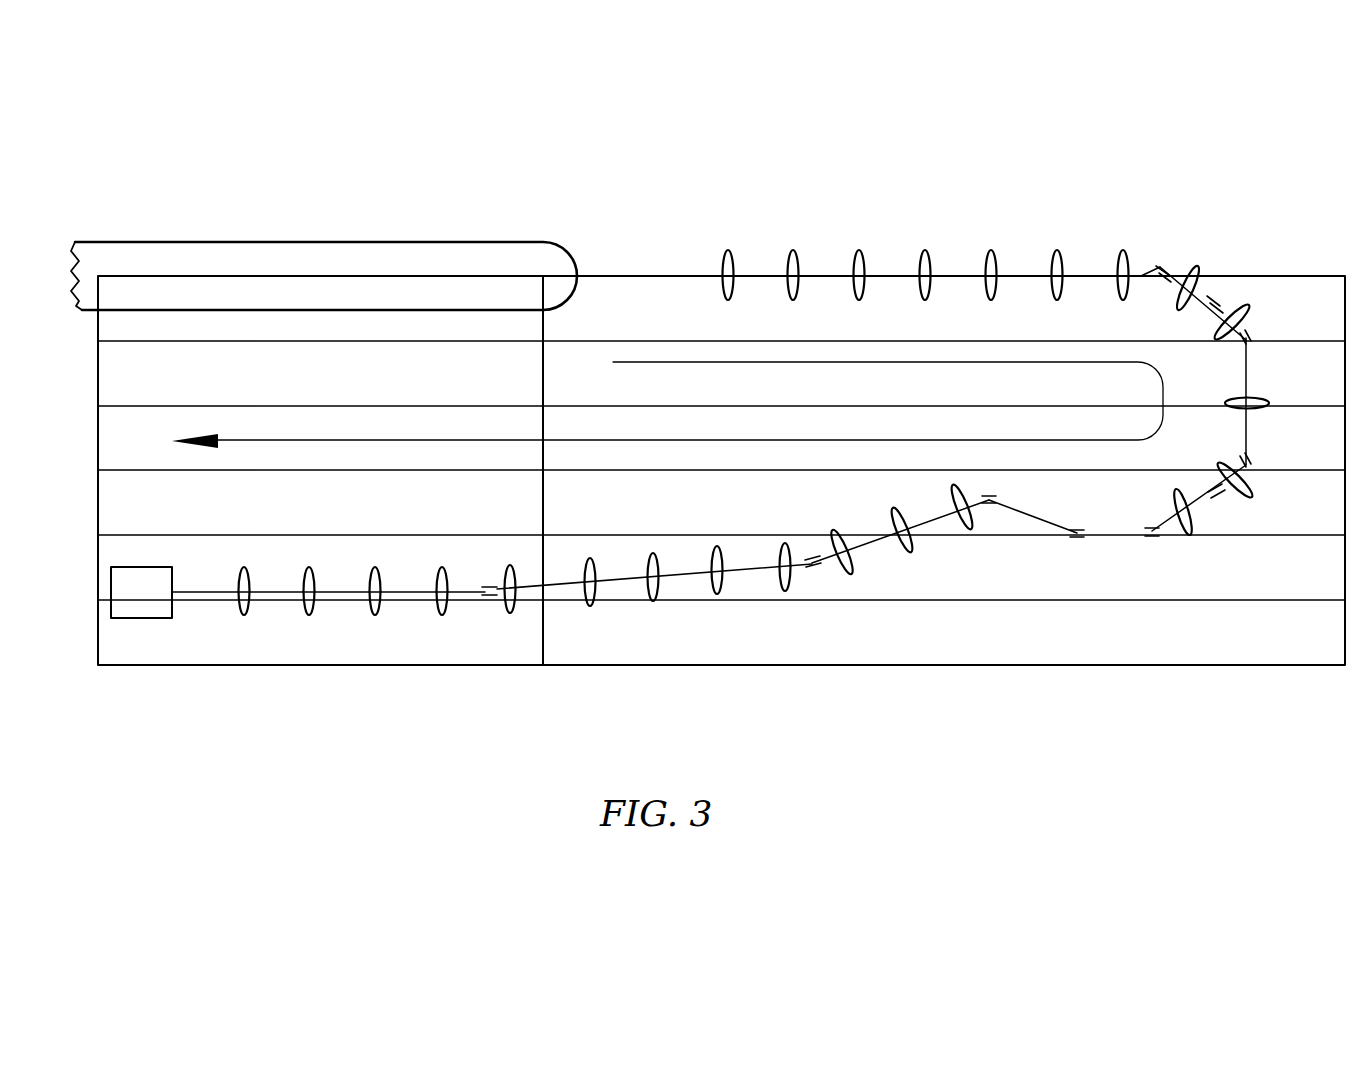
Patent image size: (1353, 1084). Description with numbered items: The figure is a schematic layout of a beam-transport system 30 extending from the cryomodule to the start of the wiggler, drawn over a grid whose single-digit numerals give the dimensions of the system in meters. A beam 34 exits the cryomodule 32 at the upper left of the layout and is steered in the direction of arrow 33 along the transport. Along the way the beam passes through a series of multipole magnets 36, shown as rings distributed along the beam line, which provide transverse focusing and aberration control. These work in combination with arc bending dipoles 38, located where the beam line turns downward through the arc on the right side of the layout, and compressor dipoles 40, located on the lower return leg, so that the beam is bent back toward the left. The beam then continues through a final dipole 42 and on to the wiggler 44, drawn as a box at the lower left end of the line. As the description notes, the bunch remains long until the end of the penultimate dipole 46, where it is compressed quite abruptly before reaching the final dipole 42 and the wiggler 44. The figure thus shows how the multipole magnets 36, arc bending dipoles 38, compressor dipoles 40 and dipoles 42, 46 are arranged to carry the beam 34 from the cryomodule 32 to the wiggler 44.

The system 30 is at (338, 738).
The cryomodule 32 is at (508, 252).
The arrow 33 is at (636, 363).
The beam 34 is at (1141, 270).
The multipole magnets 36 is at (859, 253).
The arc bending dipoles 38 is at (1157, 280).
The compressor dipoles 40 is at (811, 570).
The final dipole 42 is at (487, 583).
The wiggler 44 is at (157, 570).
The penultimate dipole 46 is at (306, 570).